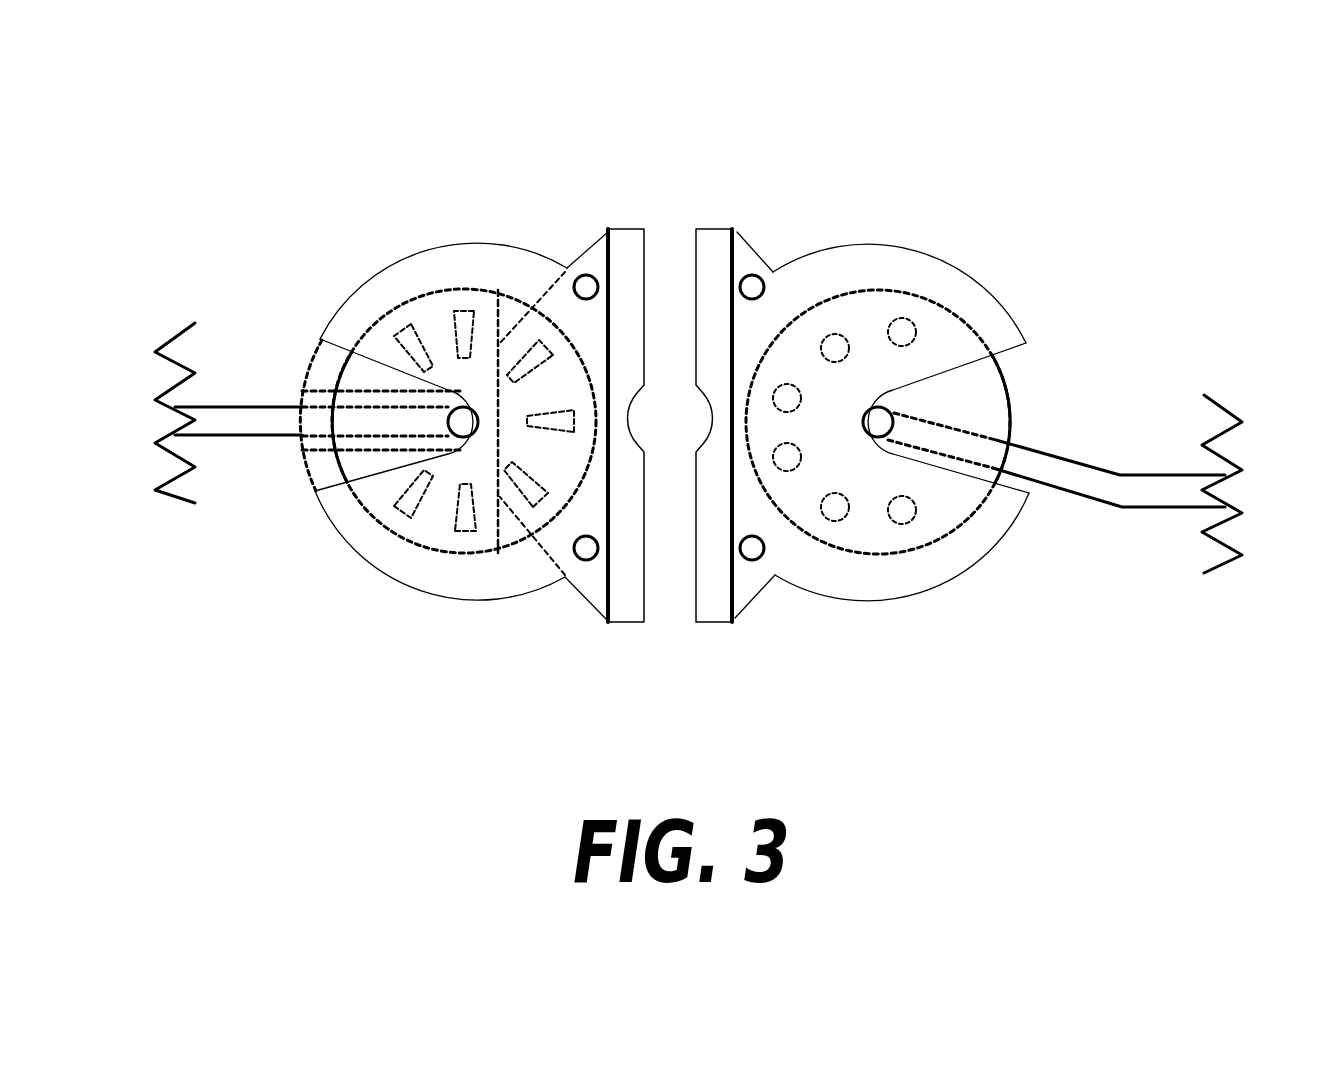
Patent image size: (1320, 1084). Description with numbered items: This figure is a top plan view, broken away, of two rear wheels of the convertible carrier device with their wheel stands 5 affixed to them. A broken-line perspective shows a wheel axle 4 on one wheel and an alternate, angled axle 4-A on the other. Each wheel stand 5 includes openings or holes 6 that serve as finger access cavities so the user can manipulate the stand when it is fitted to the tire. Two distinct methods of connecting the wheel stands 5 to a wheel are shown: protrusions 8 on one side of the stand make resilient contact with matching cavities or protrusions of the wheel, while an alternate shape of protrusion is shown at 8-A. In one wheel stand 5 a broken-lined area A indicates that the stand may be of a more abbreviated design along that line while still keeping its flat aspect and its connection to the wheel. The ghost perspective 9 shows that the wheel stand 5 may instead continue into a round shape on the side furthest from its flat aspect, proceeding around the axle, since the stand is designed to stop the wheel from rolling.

The axle 4 is at (243, 407).
The angled axle 4-A is at (1120, 507).
The wheel stand 5 is at (403, 565).
The finger access cavity 6 is at (586, 290).
The wheel stand protrusion 8 is at (391, 312).
The wheel stand protrusion—alternate 8-A is at (903, 320).
The wheel stand alternate shaping 9 is at (300, 478).
The abbreviated wheel stand line A is at (498, 300).